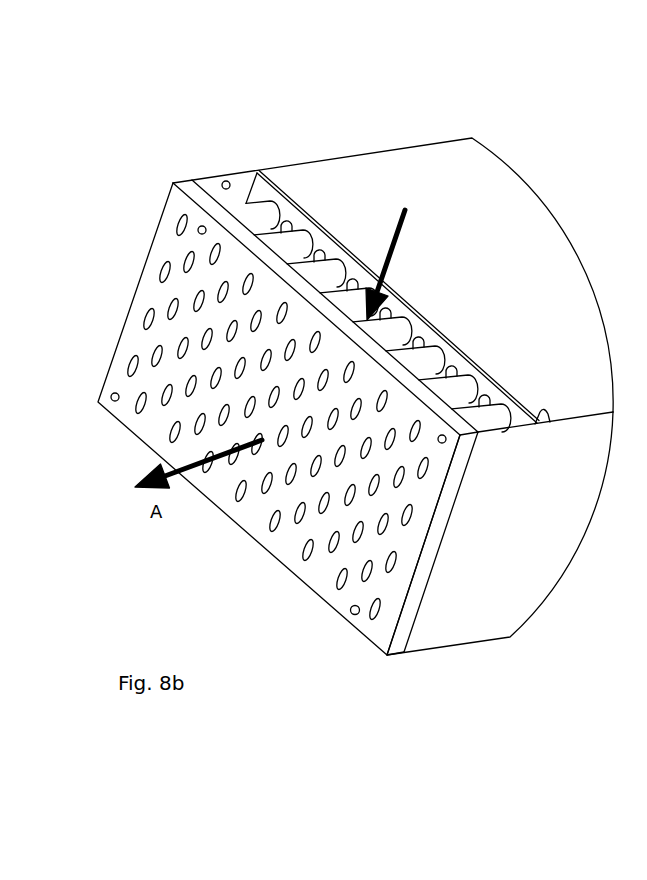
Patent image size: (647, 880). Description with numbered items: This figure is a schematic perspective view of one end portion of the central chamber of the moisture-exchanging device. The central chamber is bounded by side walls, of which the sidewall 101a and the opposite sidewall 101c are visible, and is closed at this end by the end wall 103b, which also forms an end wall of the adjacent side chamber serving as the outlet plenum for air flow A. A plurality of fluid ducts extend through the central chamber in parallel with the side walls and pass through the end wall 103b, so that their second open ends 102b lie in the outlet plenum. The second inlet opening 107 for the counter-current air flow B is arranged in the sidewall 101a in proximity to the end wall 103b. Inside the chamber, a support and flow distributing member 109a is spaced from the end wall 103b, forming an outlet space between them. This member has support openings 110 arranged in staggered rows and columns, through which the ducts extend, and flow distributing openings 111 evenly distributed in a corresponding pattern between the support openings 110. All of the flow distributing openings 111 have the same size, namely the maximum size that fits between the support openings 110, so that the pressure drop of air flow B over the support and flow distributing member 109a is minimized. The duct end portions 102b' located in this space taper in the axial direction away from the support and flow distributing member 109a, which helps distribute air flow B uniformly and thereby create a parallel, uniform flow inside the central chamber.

The sidewall of central chamber 101a is at (506, 254).
The sidewall of central chamber 101c is at (500, 533).
The second open ends of fluid ducts 102b is at (256, 419).
The end portions of ducts 102b' is at (353, 258).
The end wall 103b is at (177, 182).
The second inlet opening 107 is at (228, 179).
The support and flow distributing member 109a is at (545, 424).
The support openings 110 is at (466, 358).
The flow distributing openings 111 is at (413, 332).